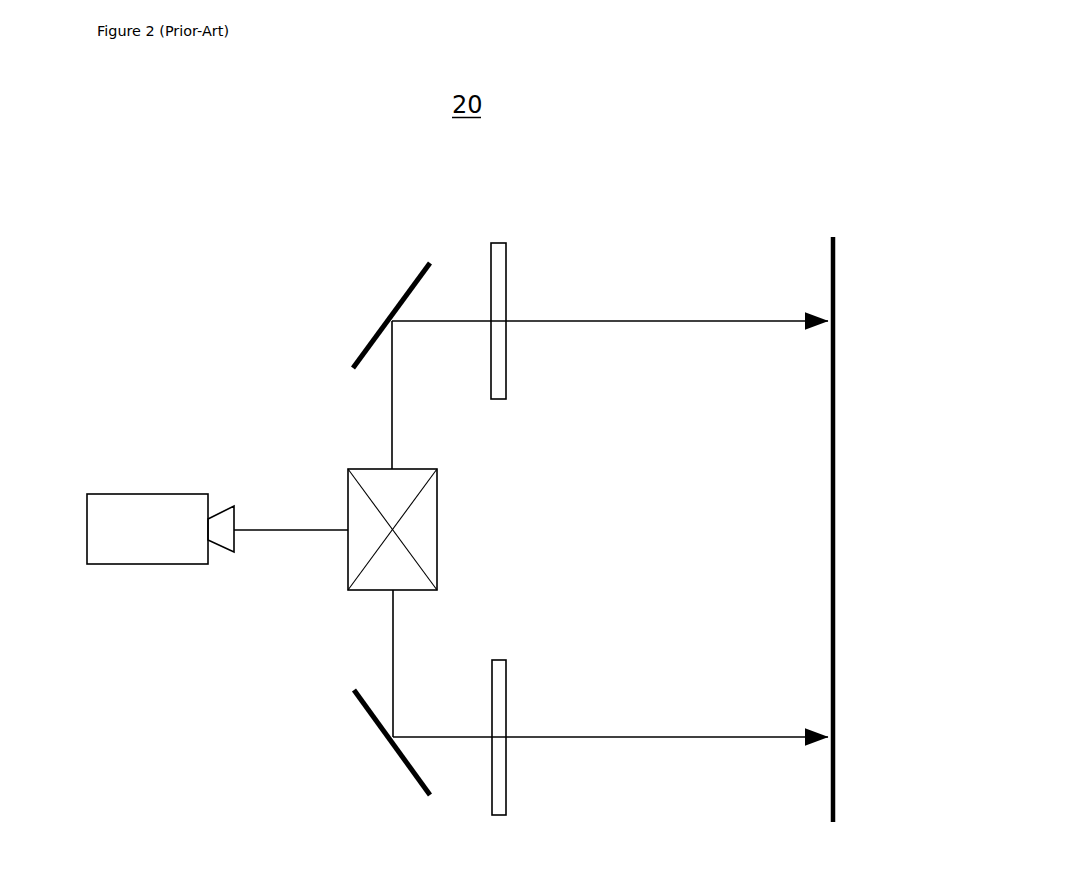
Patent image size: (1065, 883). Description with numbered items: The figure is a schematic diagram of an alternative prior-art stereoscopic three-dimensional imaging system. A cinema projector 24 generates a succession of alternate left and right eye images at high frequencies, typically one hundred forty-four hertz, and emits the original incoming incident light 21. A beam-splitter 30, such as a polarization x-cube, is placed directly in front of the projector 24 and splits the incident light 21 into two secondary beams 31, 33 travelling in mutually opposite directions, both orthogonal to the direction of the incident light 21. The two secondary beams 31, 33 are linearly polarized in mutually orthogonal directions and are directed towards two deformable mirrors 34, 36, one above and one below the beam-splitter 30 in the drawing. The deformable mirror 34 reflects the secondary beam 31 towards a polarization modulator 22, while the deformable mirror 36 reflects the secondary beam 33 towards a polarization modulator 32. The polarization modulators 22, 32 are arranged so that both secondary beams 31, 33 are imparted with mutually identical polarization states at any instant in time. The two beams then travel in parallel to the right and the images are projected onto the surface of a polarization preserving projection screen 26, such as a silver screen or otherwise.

The original incoming incident light 21 is at (297, 520).
The polarization modulator 22 is at (512, 278).
The cinema projector 24 is at (78, 545).
The polarization preserving projection screen 26 is at (847, 263).
The beam-splitter 30 is at (448, 543).
The secondary beam 31 is at (402, 436).
The polarization modulator 32 is at (527, 793).
The secondary beam 33 is at (403, 663).
The deformable mirror 34 is at (378, 312).
The deformable mirror 36 is at (355, 716).